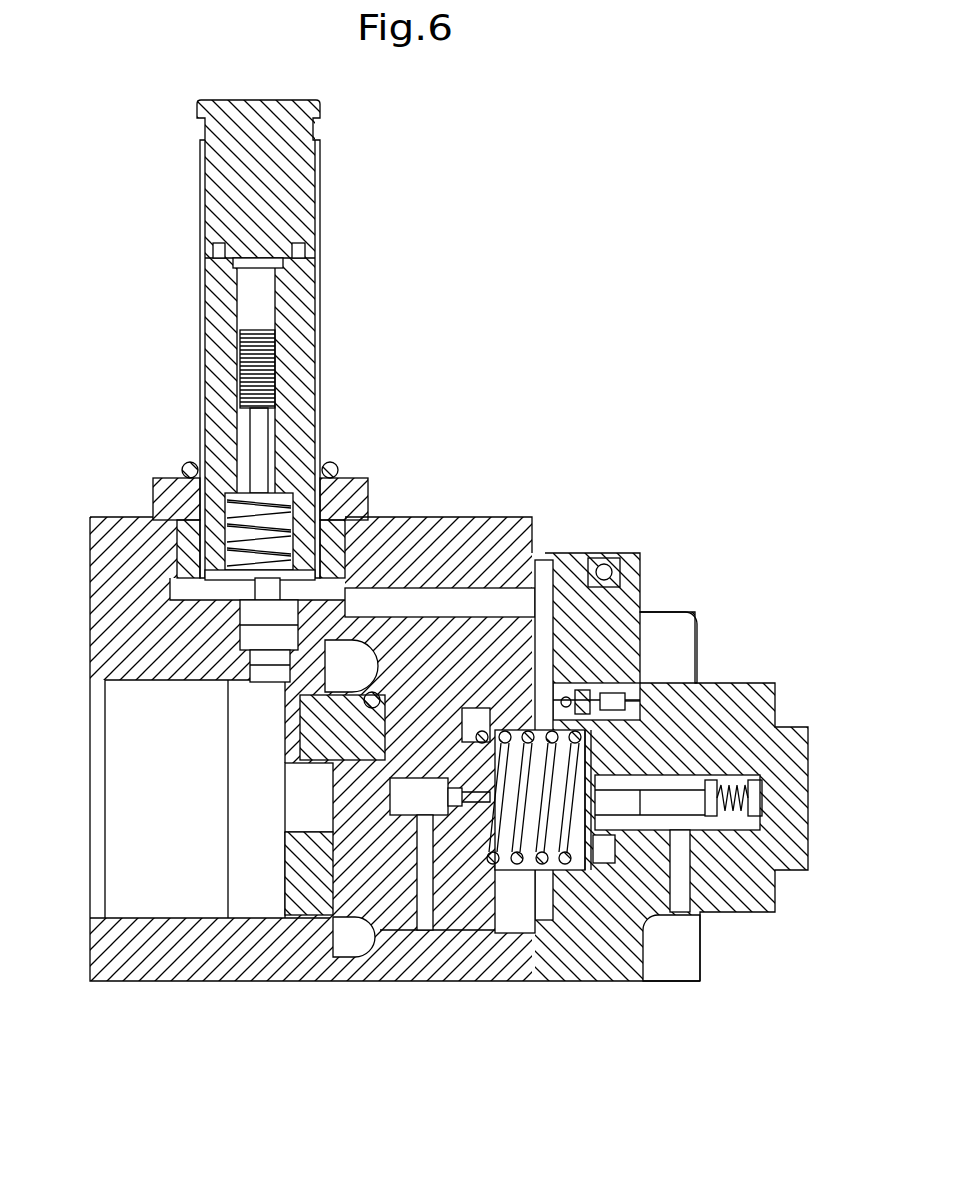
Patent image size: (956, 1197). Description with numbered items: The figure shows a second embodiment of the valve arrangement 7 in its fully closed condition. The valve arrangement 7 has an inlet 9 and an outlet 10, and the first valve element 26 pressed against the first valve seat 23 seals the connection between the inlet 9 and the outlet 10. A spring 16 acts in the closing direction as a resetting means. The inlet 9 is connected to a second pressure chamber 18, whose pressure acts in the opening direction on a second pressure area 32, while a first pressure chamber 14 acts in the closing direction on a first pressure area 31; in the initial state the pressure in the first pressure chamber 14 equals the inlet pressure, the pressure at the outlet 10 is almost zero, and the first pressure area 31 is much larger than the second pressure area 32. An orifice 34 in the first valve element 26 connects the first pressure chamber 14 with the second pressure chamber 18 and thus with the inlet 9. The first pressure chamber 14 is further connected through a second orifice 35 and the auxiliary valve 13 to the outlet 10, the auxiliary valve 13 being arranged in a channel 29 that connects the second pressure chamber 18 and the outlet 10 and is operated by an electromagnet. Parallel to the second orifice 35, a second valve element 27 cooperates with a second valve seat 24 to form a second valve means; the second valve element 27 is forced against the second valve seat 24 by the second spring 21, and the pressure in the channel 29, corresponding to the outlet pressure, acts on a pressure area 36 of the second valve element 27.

The valve arrangement 7 is at (477, 385).
The inlet 9 is at (348, 968).
The outlet 10 is at (115, 864).
The auxiliary valve 13 is at (158, 462).
The first pressure chamber 14 is at (510, 680).
The spring 16 is at (592, 840).
The second pressure chamber 18 is at (330, 953).
The second spring 21 is at (748, 795).
The first valve seat 23 is at (300, 900).
The second valve seat 24 is at (588, 875).
The first valve element 26 is at (476, 940).
The second valve element 27 is at (603, 865).
The channel 29 is at (441, 600).
The first pressure area 31 is at (512, 935).
The second pressure area 32 is at (310, 890).
The orifice 34 is at (462, 820).
The second orifice 35 is at (602, 692).
The pressure area 36 is at (590, 716).